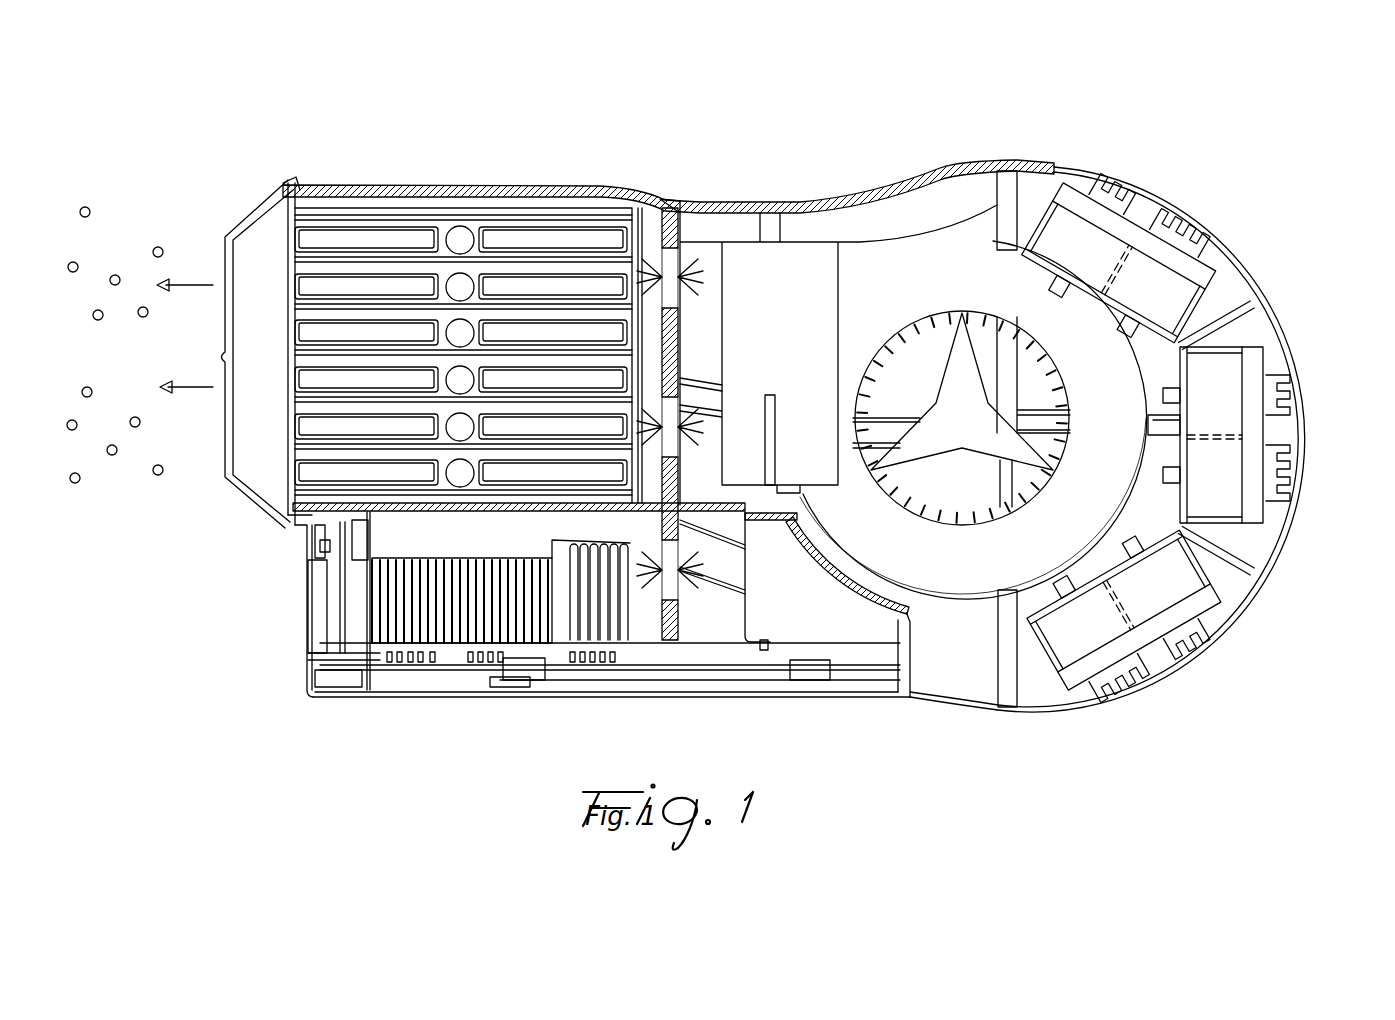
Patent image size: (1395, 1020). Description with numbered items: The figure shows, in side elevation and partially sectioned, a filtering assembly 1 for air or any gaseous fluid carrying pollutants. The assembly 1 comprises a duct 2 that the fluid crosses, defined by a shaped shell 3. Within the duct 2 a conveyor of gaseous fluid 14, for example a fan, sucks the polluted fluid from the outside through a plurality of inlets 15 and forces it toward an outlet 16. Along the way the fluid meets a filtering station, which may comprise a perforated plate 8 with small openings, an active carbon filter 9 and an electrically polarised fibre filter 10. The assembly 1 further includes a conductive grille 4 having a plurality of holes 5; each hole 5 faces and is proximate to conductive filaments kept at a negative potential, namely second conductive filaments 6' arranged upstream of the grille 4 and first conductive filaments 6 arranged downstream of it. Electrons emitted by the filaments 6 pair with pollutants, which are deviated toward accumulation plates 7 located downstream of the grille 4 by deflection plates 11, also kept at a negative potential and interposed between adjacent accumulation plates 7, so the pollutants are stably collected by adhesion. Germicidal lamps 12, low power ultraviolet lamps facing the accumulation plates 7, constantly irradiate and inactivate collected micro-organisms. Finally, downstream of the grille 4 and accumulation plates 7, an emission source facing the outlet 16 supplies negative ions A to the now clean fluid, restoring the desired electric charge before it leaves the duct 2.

The filtering assembly 1 is at (1228, 157).
The duct 2 is at (725, 232).
The shaped shell 3 is at (855, 196).
The conductive grille 4 is at (668, 199).
The hole 5 is at (658, 245).
The first conductive filament 6 is at (653, 440).
The second conductive filament 6' is at (709, 424).
The accumulation plate 7 is at (378, 268).
The perforated plate 8 is at (1163, 240).
The active carbon filter 9 is at (1157, 283).
The electrically polarised fibre filter 10 is at (1057, 253).
The deflection plate 11 is at (400, 265).
The germicidal lamp 12 is at (462, 236).
The conveyor of gaseous fluid 14 is at (958, 607).
The inlet 15 is at (1227, 243).
The outlet 16 is at (225, 245).
The ions A is at (88, 207).